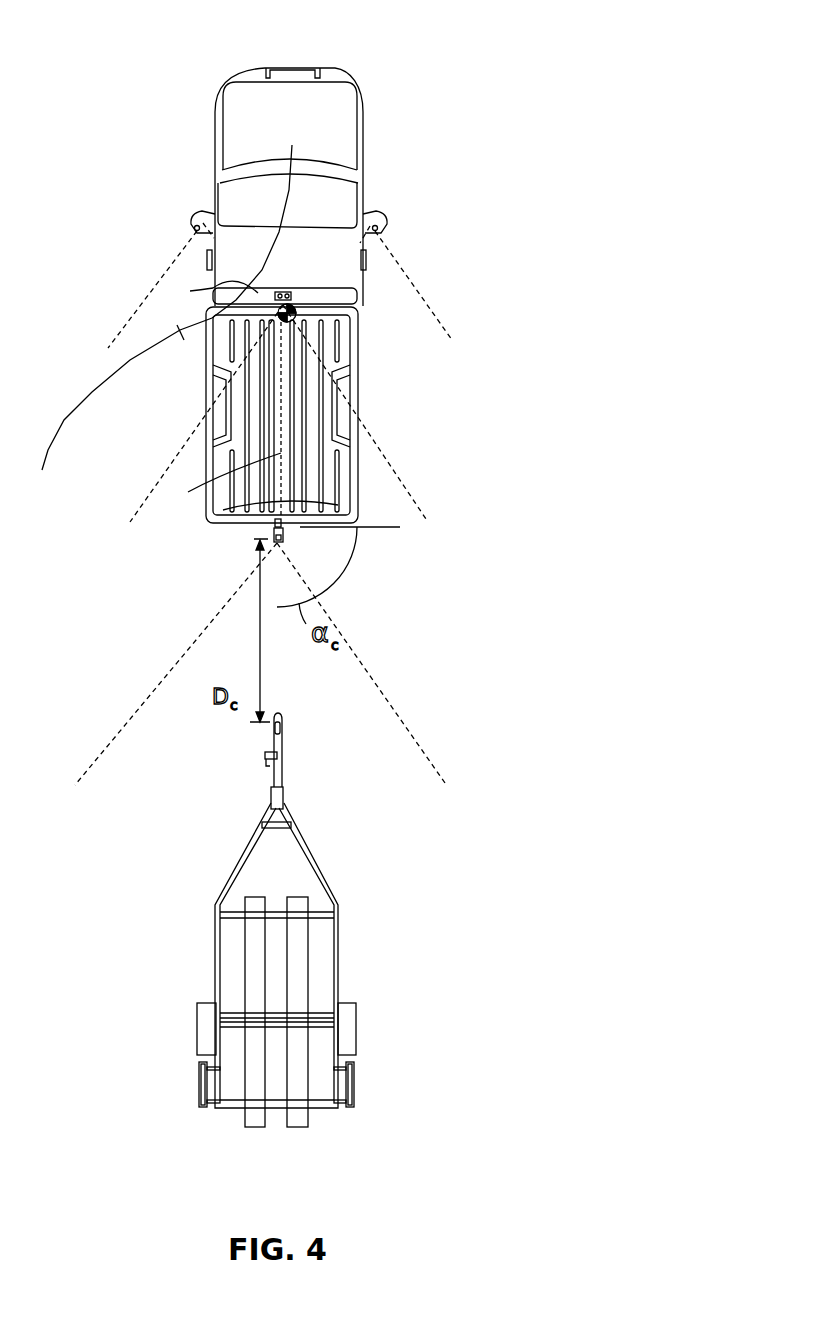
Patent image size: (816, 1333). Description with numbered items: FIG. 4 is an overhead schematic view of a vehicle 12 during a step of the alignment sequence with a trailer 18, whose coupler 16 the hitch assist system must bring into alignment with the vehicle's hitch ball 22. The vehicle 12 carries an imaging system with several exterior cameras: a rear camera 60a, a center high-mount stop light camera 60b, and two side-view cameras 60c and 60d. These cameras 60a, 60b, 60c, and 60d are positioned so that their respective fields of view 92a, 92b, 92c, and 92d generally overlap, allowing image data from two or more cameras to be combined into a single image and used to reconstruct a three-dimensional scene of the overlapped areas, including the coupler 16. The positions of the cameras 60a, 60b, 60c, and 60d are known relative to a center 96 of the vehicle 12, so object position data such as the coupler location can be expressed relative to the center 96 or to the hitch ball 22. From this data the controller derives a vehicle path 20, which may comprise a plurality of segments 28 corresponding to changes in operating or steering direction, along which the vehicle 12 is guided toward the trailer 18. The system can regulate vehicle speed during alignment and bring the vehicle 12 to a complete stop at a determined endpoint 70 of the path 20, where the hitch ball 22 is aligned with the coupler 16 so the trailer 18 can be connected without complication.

The vehicle 12 is at (365, 38).
The coupler 16 is at (284, 721).
The trailer 18 is at (229, 877).
The vehicle path 20 is at (291, 432).
The hitch 22 is at (274, 528).
The segments 28 is at (95, 411).
The rear camera 60a is at (281, 523).
The center high-mount stop light (CHMSL) camera 60b is at (289, 291).
The side-view camera 60c is at (378, 232).
The side-view camera 60d is at (194, 230).
The endpoint 70 is at (223, 510).
The field of view 92a is at (186, 656).
The field of view 92b is at (132, 512).
The field of view 92c is at (438, 319).
The field of view 92d is at (122, 328).
The center 96 is at (298, 311).